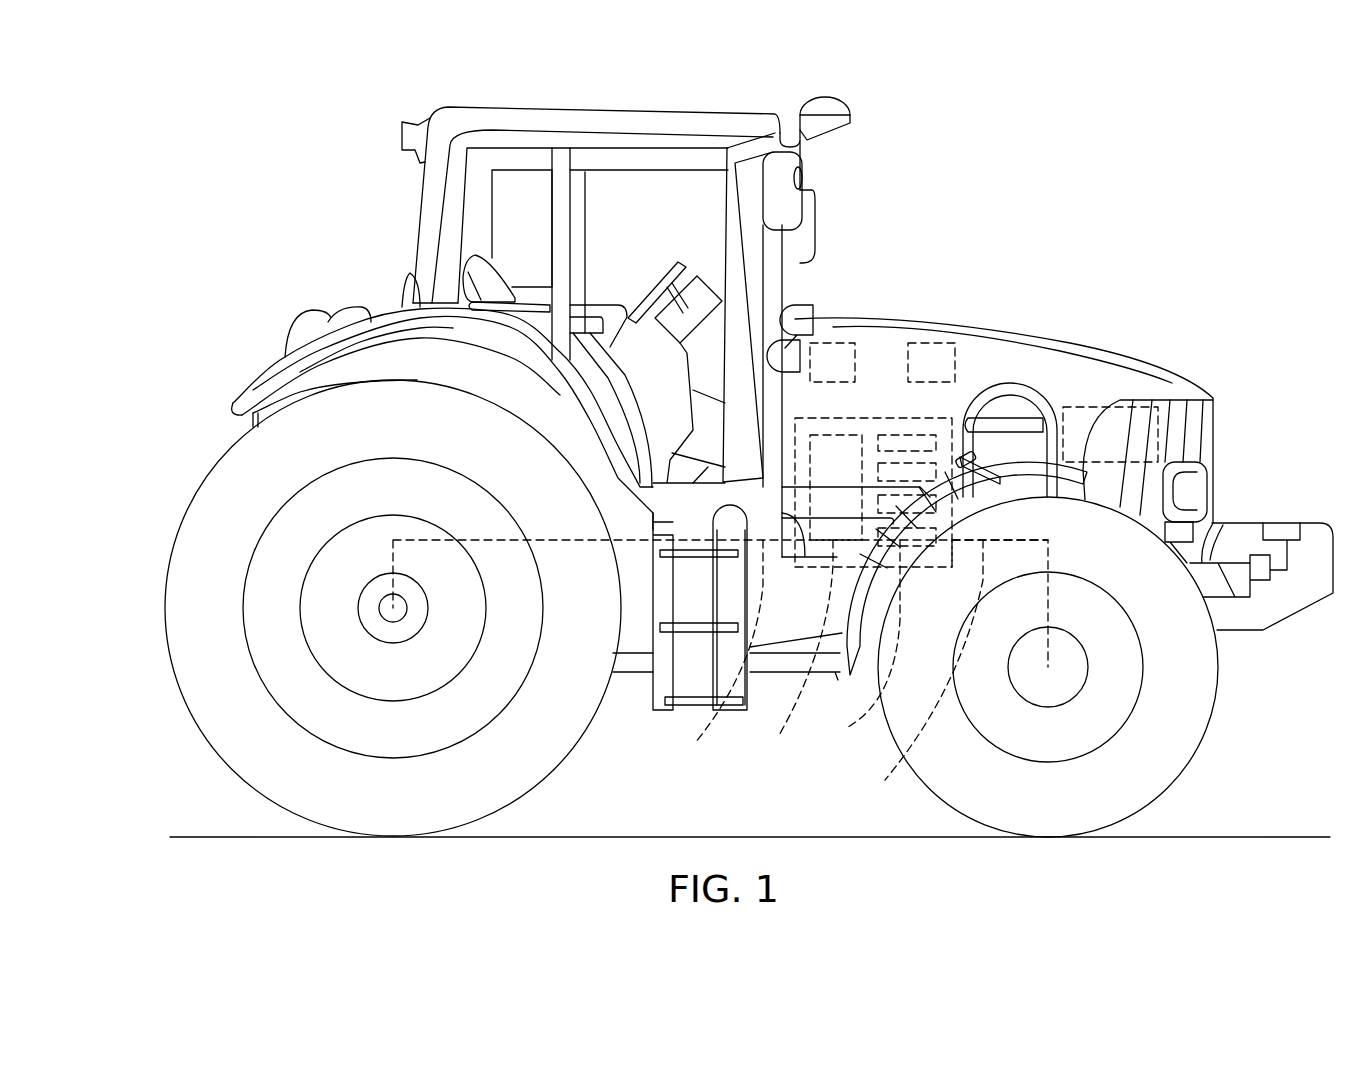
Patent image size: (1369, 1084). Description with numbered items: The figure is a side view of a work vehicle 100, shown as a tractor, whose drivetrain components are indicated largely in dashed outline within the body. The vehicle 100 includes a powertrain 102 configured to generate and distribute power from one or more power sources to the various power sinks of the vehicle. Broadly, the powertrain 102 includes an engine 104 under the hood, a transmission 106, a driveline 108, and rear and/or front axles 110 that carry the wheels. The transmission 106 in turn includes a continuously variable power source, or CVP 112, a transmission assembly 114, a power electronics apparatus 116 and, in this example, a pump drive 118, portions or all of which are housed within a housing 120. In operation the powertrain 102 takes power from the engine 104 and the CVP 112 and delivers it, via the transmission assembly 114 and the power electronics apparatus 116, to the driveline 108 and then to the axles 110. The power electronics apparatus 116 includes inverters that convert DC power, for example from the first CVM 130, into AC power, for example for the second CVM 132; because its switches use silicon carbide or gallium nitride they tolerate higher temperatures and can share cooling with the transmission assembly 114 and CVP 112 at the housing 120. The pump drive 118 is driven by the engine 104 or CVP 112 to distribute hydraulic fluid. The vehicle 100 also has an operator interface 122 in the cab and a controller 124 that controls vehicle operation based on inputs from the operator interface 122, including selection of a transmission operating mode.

The work vehicle 100 is at (318, 259).
The powertrain 102 is at (1135, 355).
The engine 104 is at (1167, 434).
The transmission 106 is at (882, 411).
The driveline 108 is at (815, 669).
The rear and/or front axles 110 is at (393, 609).
The continuously variable power source (CVP) 112 is at (957, 497).
The transmission assembly 114 is at (784, 652).
The power electronics apparatus 116 is at (970, 452).
The pump drive 118 is at (854, 644).
The housing 120 is at (797, 452).
The human-machine (operator) interface 122 is at (832, 343).
The controller 124 is at (932, 343).
The first CVM 130 is at (1050, 387).
The second CVM 132 is at (720, 603).